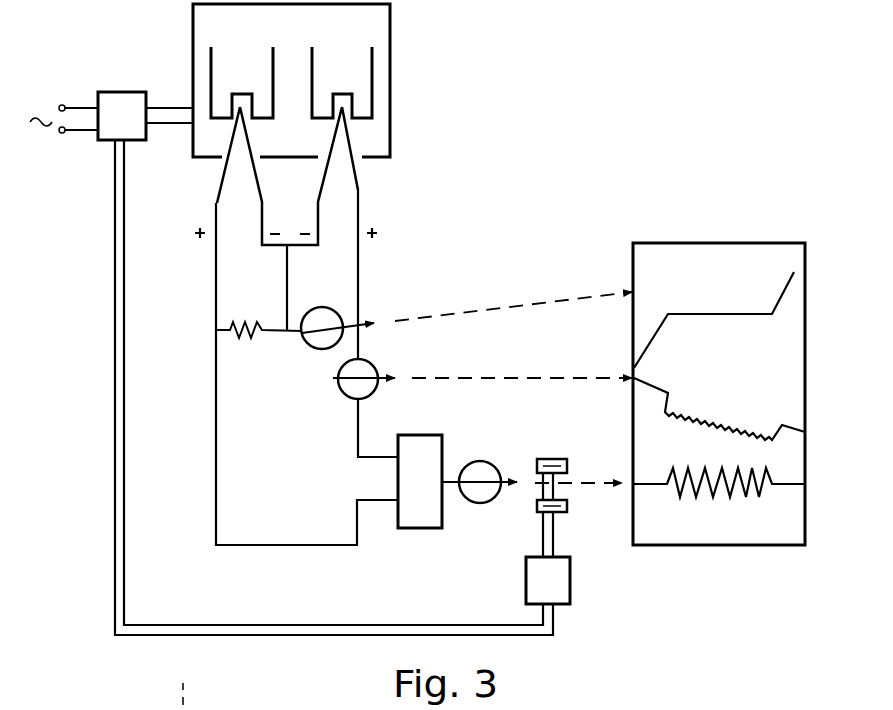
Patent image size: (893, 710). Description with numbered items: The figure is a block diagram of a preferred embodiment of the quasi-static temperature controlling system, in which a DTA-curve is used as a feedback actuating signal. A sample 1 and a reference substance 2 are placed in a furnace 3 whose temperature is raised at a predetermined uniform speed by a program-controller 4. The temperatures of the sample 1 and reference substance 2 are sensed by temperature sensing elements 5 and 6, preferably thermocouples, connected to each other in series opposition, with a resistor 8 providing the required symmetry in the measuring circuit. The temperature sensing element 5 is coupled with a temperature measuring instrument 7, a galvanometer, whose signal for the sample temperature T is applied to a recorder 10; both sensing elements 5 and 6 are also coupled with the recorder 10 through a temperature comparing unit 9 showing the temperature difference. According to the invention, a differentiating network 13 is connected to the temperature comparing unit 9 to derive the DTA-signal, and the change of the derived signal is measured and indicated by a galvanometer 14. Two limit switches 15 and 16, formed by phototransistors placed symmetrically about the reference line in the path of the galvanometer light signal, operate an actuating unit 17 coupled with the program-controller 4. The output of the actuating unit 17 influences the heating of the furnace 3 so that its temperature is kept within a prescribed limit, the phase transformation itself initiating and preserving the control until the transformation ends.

The sample 1 is at (350, 66).
The reference substance 2 is at (220, 59).
The furnace 3 is at (392, 104).
The program-controller 4 is at (118, 104).
The temperature sensing element 5 is at (330, 167).
The temperature sensing element 6 is at (238, 180).
The temperature measuring instrument 7 is at (317, 340).
The resistor 8 is at (241, 320).
The temperature comparing unit 9 is at (351, 393).
The recorder 10 is at (657, 258).
The differentiating network 13 is at (412, 512).
The galvanometer 14 is at (488, 492).
The limit switch 15 is at (567, 466).
The limit switch 16 is at (567, 508).
The actuating unit 17 is at (556, 590).